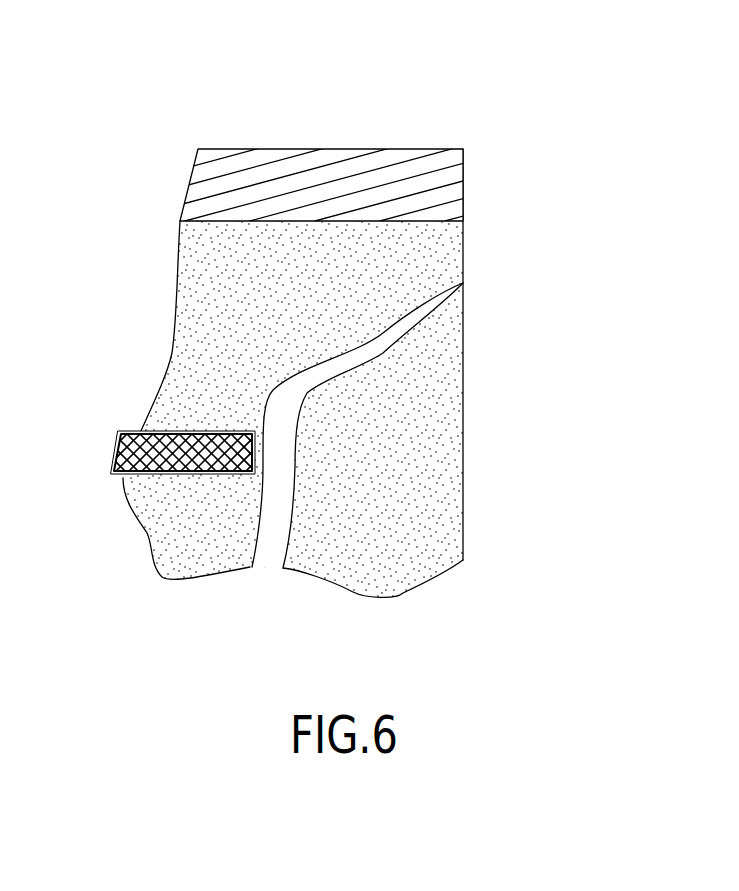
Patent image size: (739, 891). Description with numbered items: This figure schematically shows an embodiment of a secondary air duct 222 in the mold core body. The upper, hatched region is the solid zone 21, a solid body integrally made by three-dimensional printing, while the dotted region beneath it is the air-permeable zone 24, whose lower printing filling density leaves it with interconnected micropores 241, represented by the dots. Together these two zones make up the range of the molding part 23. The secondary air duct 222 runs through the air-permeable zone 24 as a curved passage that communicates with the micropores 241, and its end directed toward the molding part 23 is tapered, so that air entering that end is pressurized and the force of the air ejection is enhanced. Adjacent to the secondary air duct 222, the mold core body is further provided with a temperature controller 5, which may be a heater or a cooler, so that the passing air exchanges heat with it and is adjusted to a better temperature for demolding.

The solid zone 21 is at (338, 182).
The molding part 23 is at (463, 243).
The air-permeable zone 24 is at (420, 408).
The micropores 241 is at (435, 345).
The secondary air duct 222 is at (280, 492).
The temperature controller 5 is at (127, 433).